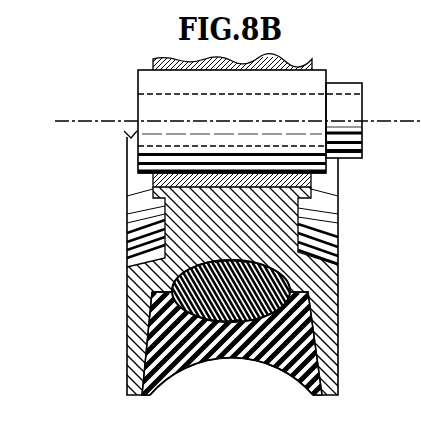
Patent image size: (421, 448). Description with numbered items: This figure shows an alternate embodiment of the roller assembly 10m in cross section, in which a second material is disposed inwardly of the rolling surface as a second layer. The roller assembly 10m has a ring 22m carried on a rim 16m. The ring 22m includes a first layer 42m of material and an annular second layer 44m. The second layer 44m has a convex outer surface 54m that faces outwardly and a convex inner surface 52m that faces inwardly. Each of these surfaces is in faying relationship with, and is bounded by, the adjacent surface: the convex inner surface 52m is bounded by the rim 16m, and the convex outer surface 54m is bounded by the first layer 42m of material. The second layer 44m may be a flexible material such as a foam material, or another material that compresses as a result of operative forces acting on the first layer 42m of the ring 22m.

The roller assembly 10m is at (126, 307).
The rim 16m is at (260, 222).
The ring 22m is at (183, 368).
The first layer 42m is at (277, 347).
The second layer 44m is at (250, 283).
The convex inner surface 52m is at (243, 260).
The convex outer surface 54m is at (224, 325).